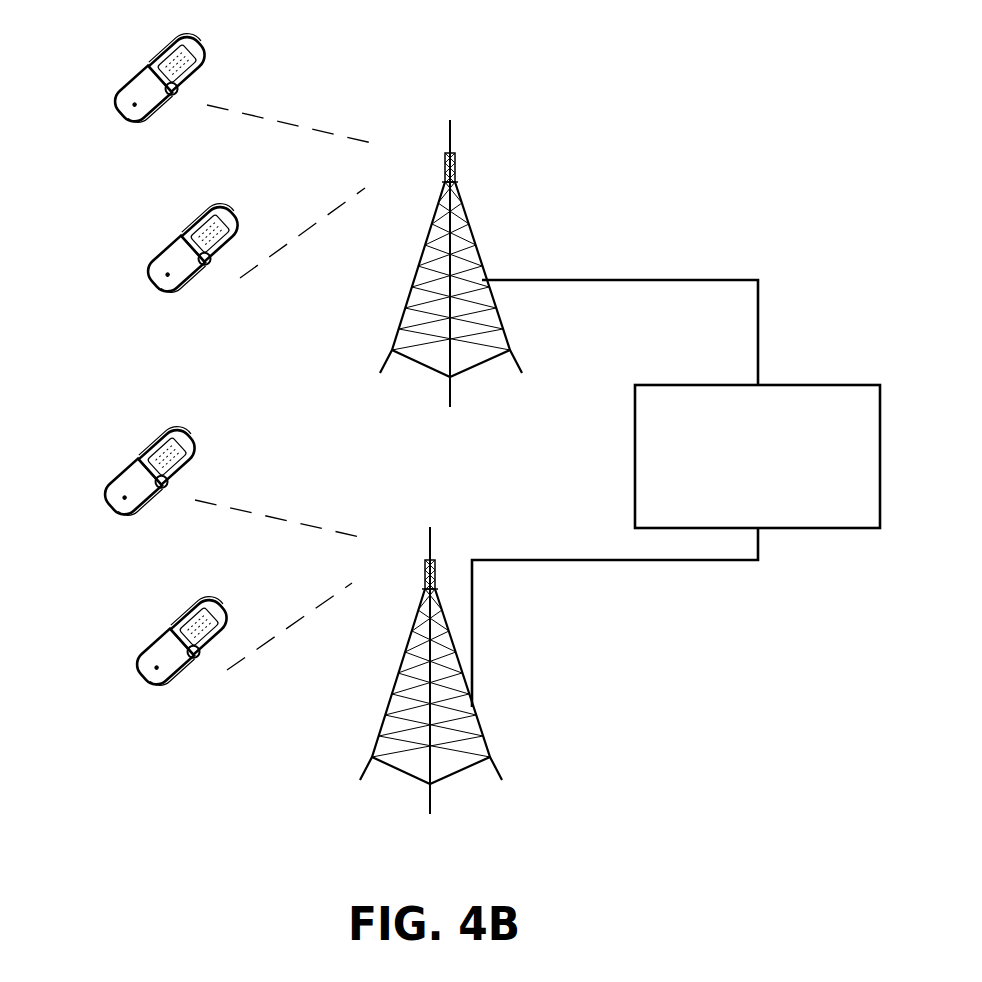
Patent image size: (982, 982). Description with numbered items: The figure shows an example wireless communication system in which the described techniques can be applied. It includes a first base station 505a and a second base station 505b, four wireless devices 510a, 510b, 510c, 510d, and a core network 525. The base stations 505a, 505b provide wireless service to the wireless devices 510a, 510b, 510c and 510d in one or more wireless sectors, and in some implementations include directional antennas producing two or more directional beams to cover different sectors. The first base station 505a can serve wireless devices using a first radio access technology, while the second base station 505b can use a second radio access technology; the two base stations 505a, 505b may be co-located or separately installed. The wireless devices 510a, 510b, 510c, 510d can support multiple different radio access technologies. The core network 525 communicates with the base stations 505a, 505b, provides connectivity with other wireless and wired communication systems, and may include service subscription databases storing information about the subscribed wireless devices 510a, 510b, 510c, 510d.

The wireless device 510a is at (160, 52).
The wireless device 510b is at (193, 222).
The wireless device 510c is at (150, 445).
The wireless device 510d is at (182, 615).
The first base station 505a is at (470, 212).
The second base station 505b is at (437, 555).
The core network 525 is at (655, 385).